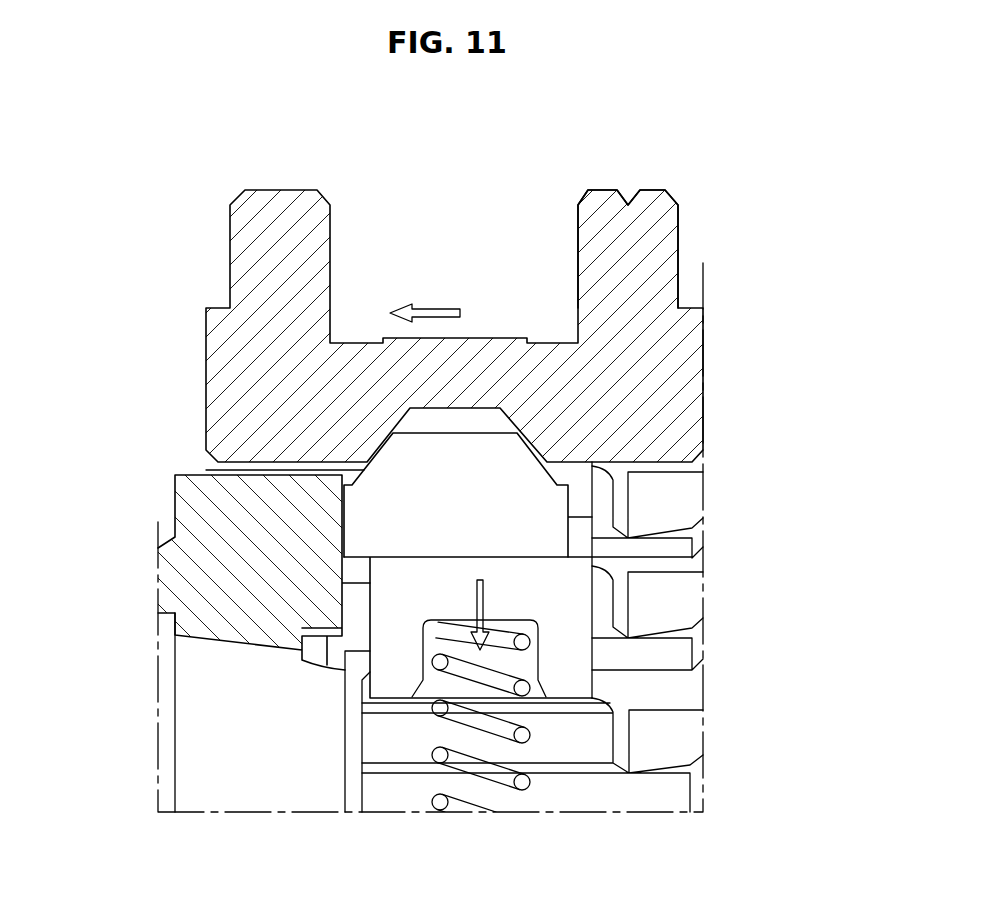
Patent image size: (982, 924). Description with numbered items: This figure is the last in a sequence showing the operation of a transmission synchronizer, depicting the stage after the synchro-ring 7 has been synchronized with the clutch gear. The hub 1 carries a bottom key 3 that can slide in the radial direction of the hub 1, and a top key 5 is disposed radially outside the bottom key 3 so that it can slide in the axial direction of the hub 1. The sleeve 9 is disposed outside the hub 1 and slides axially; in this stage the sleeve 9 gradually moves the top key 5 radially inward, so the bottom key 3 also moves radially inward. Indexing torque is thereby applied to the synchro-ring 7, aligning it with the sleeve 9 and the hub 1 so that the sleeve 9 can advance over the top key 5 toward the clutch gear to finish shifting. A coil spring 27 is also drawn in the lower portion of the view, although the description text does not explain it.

The hub 1 is at (662, 498).
The bottom key 3 is at (555, 605).
The top key 5 is at (448, 488).
The synchro-ring 7 is at (207, 505).
The sleeve 9 is at (648, 217).
The coil spring 27 is at (437, 644).